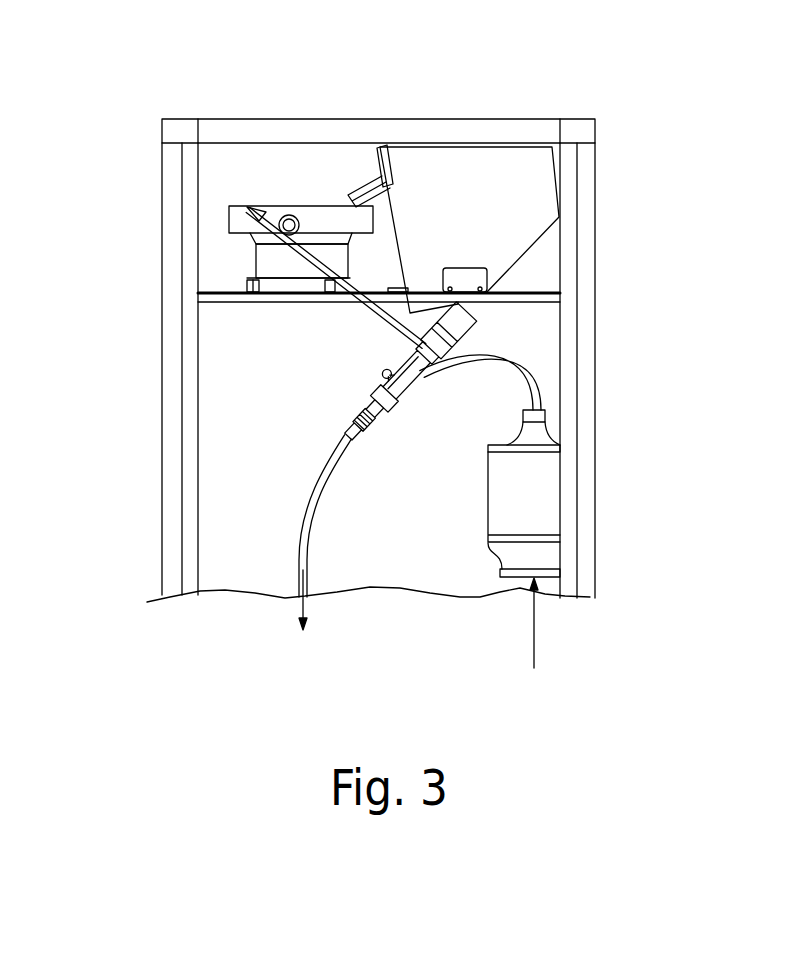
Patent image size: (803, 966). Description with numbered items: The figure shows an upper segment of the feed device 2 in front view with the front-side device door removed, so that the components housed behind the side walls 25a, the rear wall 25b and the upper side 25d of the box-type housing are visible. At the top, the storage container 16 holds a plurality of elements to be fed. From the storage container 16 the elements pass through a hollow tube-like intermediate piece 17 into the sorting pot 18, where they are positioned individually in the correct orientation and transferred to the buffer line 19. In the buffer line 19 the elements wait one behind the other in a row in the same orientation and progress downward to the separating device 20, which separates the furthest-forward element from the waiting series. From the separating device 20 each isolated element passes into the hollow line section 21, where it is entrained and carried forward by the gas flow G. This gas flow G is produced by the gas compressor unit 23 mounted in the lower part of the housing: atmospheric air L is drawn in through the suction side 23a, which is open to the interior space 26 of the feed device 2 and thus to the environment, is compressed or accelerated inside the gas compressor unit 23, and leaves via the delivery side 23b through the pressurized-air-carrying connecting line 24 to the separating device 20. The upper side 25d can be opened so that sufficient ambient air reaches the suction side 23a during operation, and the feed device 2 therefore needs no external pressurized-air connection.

The feed device 2 is at (384, 302).
The storage container 16 is at (488, 167).
The intermediate piece 17 is at (360, 185).
The sorting pot 18 is at (312, 190).
The buffer line 19 is at (322, 268).
The separating device 20 is at (388, 357).
The line section 21 is at (310, 510).
The gas compressor unit 23 is at (581, 493).
The suction side 23a is at (519, 578).
The delivery side 23b is at (535, 409).
The connecting line 24 is at (530, 357).
The side walls 25a is at (596, 223).
The rear wall 25b is at (430, 513).
The upper side 25d is at (442, 132).
The interior space 26 is at (222, 520).
The gas flow G is at (305, 612).
The atmospheric air L is at (537, 622).